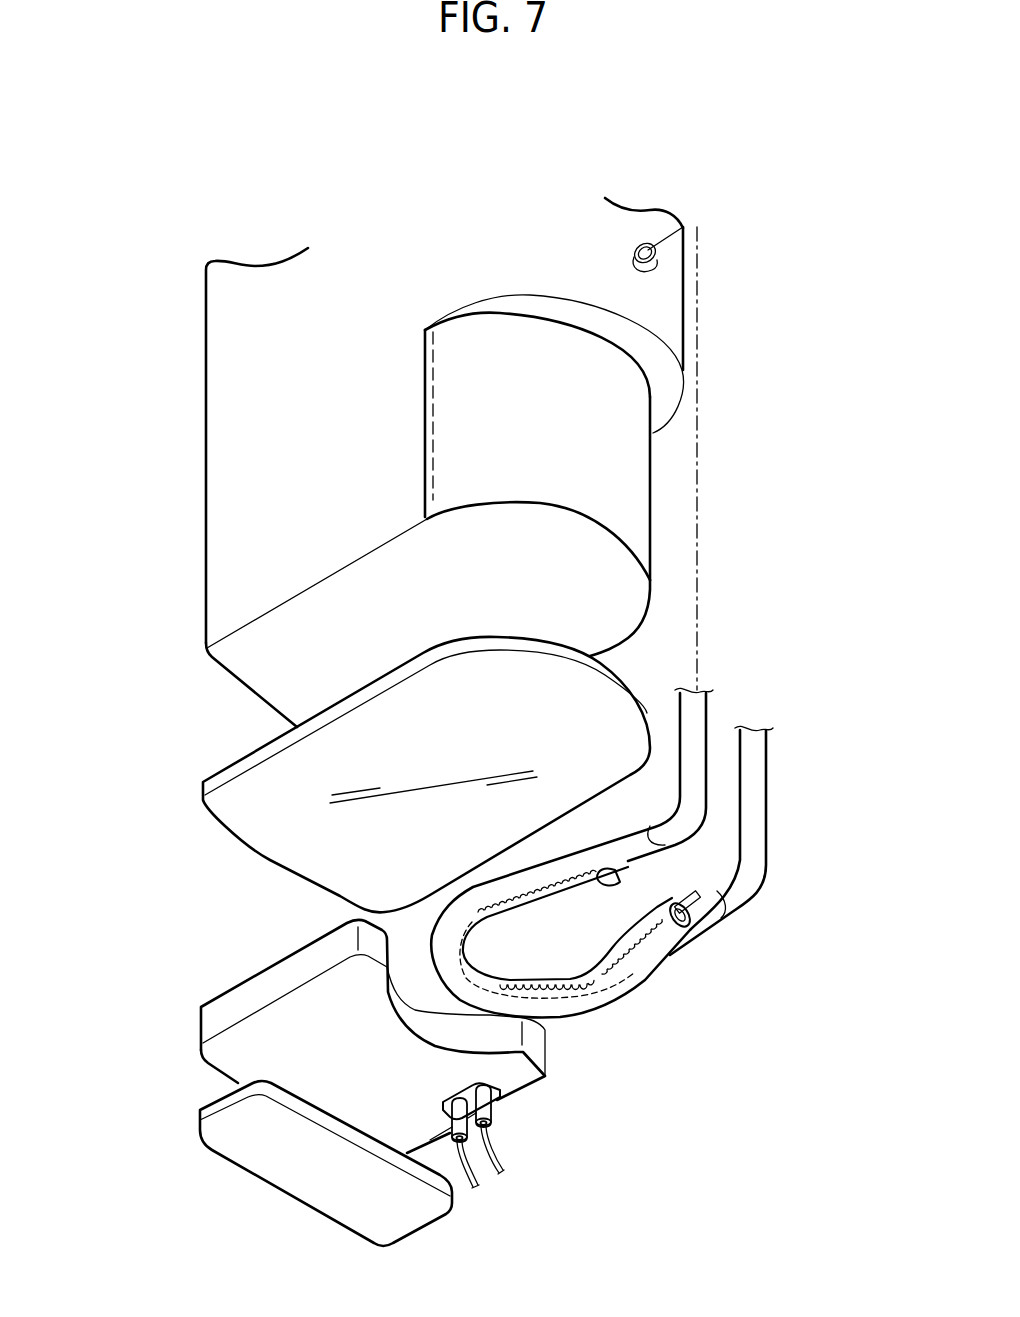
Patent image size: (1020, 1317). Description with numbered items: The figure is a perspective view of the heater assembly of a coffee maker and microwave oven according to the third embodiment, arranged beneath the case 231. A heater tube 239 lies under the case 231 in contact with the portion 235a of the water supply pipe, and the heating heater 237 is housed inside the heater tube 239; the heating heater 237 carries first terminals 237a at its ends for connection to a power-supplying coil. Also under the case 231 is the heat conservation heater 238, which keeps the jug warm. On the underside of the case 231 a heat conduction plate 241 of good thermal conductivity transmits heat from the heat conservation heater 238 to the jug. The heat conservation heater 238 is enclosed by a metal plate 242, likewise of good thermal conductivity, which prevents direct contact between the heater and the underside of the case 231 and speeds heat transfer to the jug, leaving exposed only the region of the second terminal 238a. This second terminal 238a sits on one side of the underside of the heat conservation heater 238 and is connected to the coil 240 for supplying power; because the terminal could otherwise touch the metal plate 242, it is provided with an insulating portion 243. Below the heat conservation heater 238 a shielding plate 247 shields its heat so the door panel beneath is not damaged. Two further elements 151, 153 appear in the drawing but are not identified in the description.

The case 231 is at (198, 455).
The heat conduction plate 241 is at (262, 830).
The metal plate 242 is at (228, 996).
The shielding plate 247 is at (282, 1185).
The portion of the water supply pipe 235a is at (672, 955).
The heating heater 237 is at (621, 968).
The first terminals 237a is at (707, 923).
The heater tube 239 is at (538, 963).
The first pipe 151 is at (695, 755).
The second pipe 153 is at (753, 815).
The heat conservation heater 238 is at (453, 1093).
The second terminal 238a is at (527, 1092).
The insulating portion 243 is at (492, 1108).
The coil 240 is at (497, 1158).